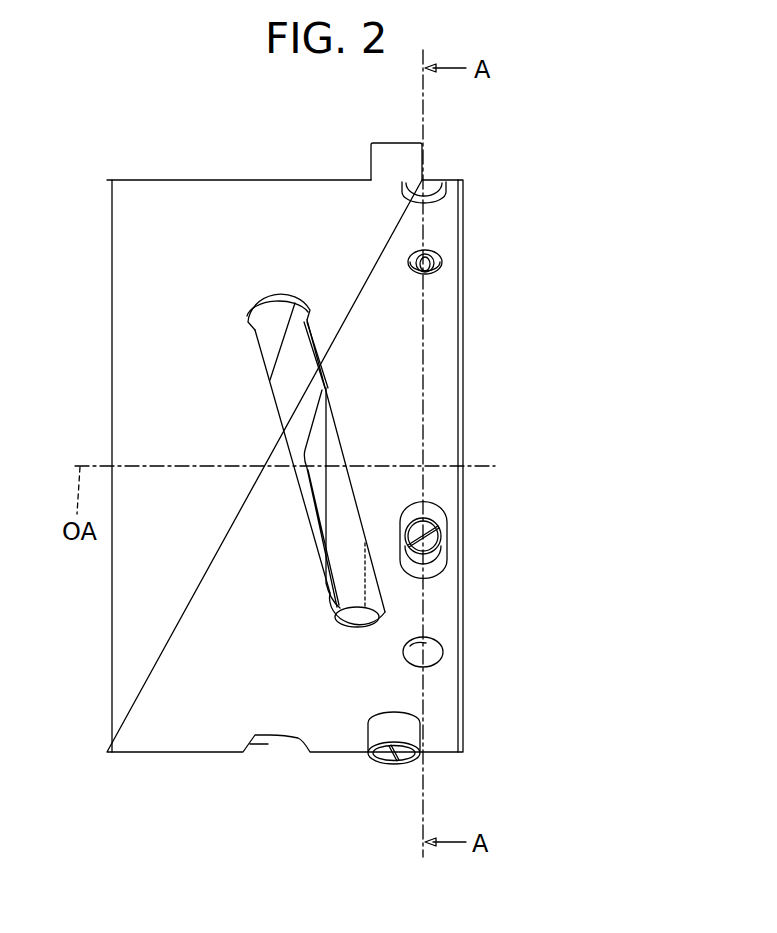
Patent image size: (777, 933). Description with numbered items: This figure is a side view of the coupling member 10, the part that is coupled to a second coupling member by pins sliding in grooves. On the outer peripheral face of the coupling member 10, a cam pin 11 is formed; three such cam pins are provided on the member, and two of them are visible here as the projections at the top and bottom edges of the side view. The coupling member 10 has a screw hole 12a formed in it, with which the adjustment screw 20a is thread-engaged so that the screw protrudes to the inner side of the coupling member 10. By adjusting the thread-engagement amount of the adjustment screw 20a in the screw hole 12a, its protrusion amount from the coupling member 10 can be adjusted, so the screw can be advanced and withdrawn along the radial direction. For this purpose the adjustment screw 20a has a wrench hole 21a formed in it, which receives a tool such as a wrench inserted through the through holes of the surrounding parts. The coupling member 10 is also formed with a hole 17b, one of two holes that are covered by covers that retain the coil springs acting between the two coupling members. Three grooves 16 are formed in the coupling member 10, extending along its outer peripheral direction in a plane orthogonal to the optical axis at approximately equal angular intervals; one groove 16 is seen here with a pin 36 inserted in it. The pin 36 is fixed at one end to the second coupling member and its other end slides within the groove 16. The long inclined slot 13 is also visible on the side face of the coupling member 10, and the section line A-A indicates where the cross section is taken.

The coupling member 10 is at (180, 197).
The cam pin 11 is at (385, 153).
The screw hole 12a is at (422, 256).
The slot 13 is at (290, 415).
The groove 16 is at (433, 193).
The hole 17b is at (437, 656).
The adjustment screw 20a is at (437, 261).
The wrench hole 21a is at (430, 268).
The pin 36 is at (441, 534).